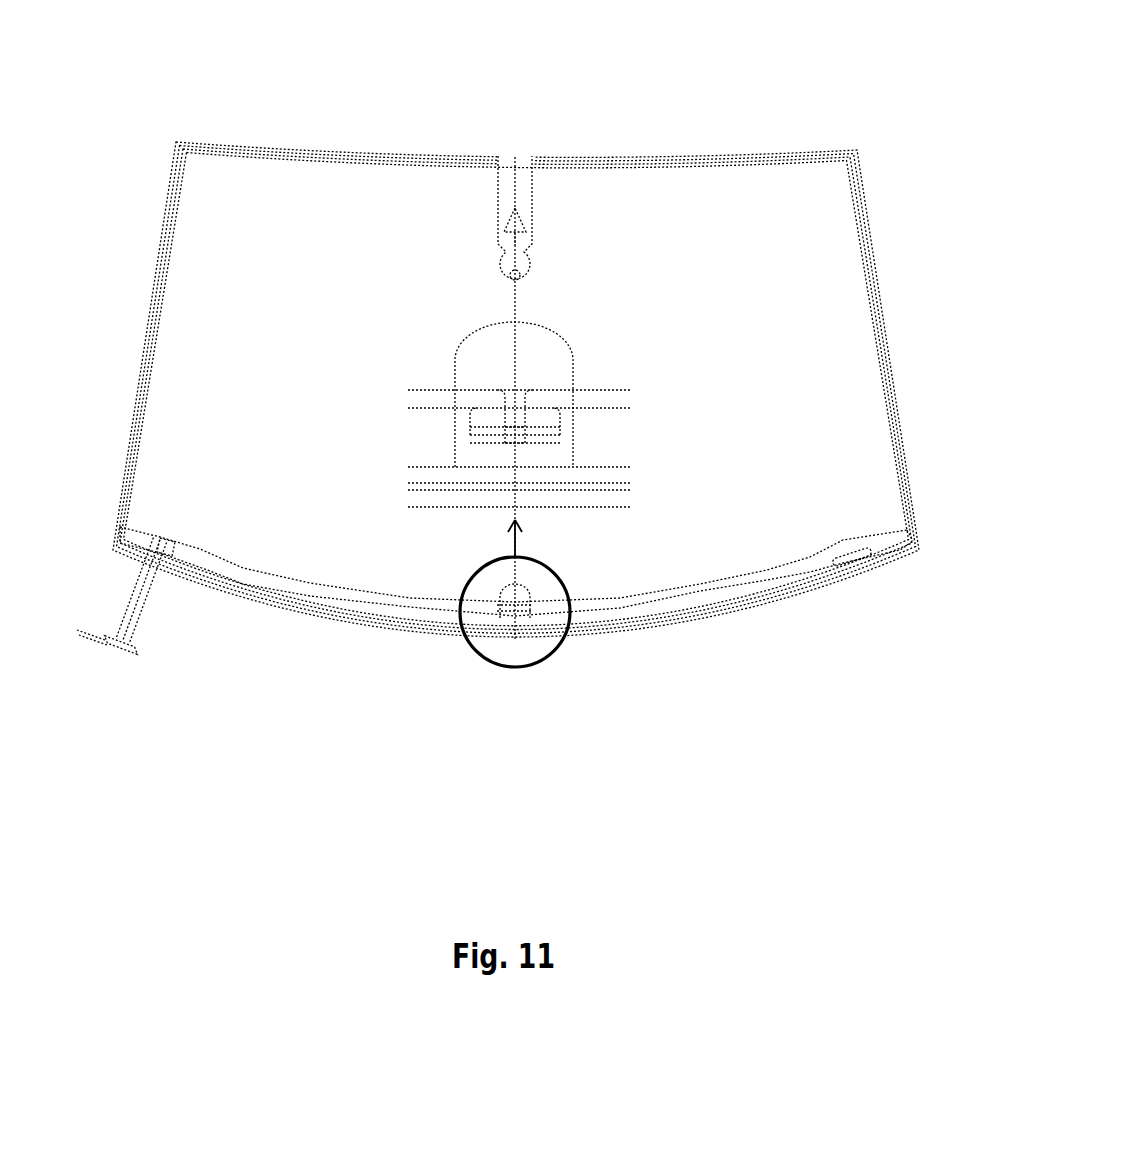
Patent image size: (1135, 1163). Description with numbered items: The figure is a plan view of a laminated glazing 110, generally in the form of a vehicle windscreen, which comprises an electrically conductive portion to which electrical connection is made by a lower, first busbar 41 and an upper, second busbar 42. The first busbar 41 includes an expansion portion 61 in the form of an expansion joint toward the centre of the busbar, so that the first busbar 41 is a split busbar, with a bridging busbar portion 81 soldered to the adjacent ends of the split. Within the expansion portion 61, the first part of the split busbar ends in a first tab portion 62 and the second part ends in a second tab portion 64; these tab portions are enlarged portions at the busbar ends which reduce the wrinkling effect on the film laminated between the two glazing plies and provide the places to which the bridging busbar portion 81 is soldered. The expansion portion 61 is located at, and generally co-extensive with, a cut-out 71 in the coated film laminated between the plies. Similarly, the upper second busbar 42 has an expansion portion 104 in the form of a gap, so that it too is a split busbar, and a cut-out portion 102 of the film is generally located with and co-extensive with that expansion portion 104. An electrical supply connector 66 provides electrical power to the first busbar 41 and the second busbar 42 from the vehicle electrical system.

The laminated glazing 110 is at (756, 97).
The second busbar 42 is at (250, 157).
The first busbar 41 is at (600, 397).
The cut-out 71 is at (483, 332).
The cut-out portion 102 is at (498, 192).
The expansion portion 104 is at (508, 172).
The first tab portion 62 is at (490, 415).
The second tab portion 64 is at (537, 417).
The bridging busbar portion 81 is at (518, 437).
The expansion portion 61 is at (474, 663).
The electrical supply connector 66 is at (125, 647).